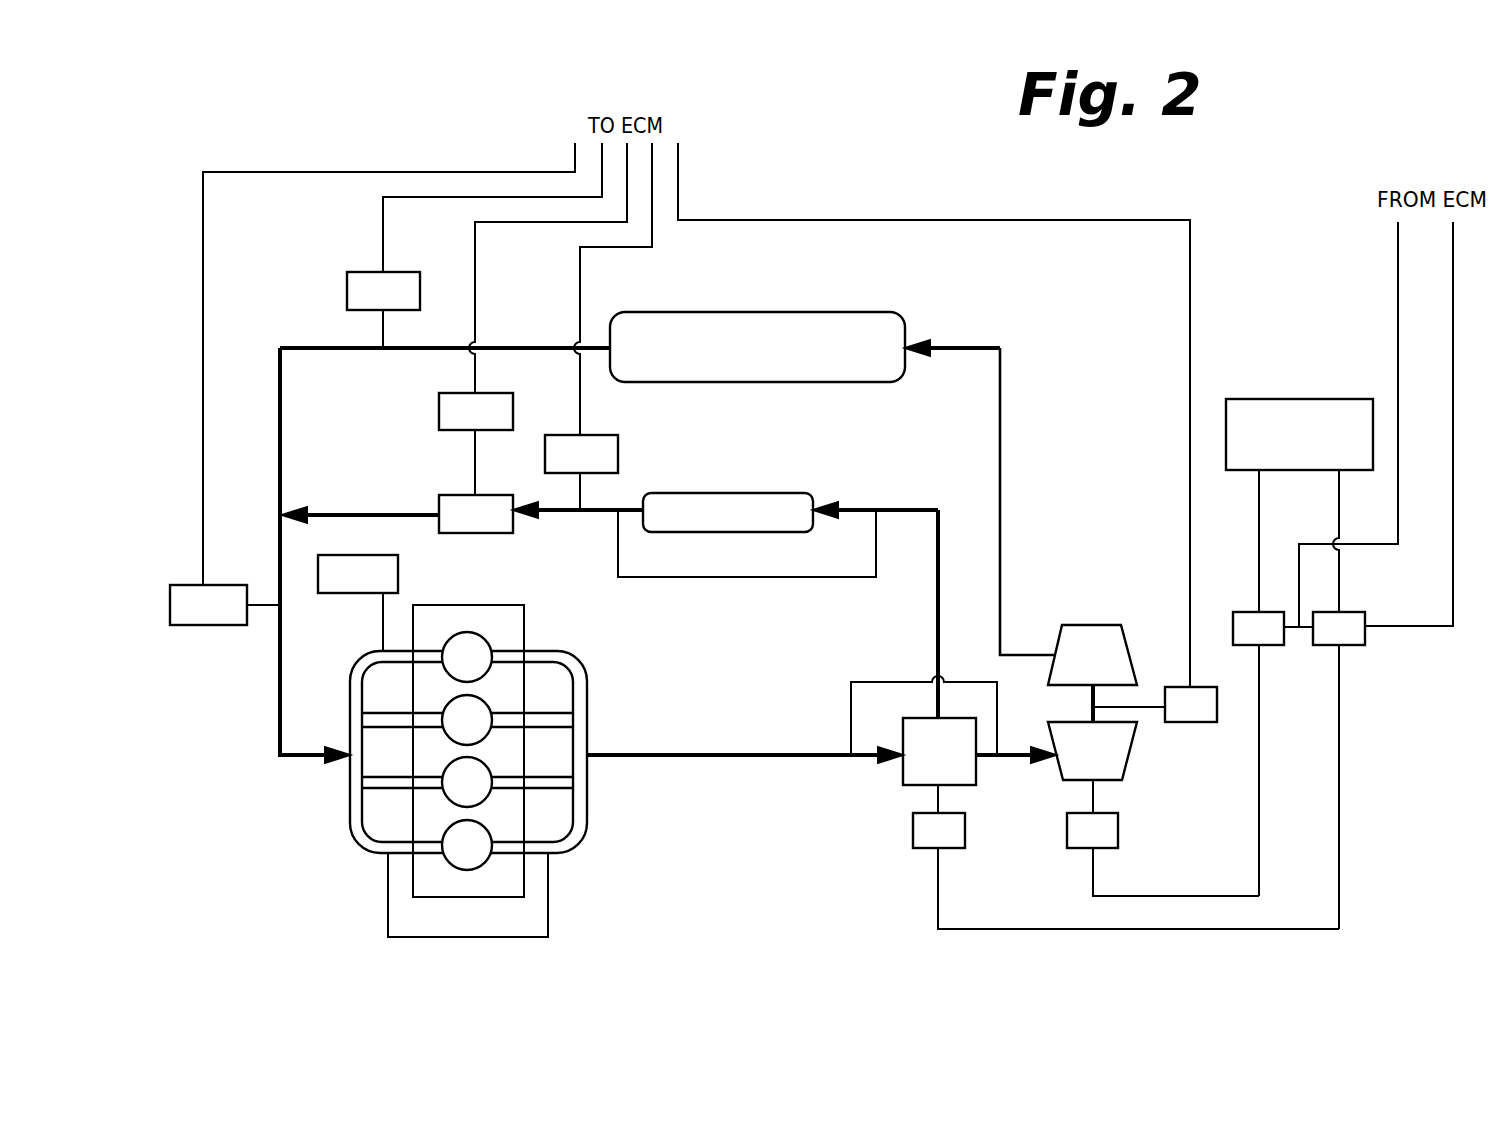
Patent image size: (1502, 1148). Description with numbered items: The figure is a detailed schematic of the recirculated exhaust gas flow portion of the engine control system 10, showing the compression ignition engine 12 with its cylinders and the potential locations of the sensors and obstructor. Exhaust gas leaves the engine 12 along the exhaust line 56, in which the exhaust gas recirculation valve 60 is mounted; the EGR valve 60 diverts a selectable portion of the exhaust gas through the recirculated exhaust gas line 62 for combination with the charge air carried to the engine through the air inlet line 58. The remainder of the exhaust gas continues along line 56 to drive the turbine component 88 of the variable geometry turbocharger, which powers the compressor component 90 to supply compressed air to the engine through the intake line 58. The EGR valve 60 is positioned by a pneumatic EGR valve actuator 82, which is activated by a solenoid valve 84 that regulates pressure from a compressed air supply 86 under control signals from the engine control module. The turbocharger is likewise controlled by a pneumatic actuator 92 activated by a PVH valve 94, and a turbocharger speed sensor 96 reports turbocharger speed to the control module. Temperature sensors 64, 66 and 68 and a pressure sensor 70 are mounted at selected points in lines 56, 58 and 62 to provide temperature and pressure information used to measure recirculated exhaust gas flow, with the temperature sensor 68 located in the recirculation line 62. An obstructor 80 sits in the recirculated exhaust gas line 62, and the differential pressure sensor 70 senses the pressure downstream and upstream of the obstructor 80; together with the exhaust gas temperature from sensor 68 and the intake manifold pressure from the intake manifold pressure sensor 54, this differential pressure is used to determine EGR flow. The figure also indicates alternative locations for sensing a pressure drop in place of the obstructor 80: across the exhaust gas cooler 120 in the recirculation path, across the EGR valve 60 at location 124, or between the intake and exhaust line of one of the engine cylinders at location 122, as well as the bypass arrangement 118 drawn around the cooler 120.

The system 10 is at (787, 862).
The compression ignition engine 12 is at (495, 605).
The intake manifold pressure sensor 54 is at (398, 580).
The exhaust line 56 is at (673, 753).
The air inlet line 58 is at (1002, 488).
The exhaust gas recirculation valve 60 is at (903, 768).
The recirculated exhaust gas line 62 is at (938, 590).
The temperature sensor 64 is at (347, 297).
The temperature sensor 66 is at (215, 625).
The temperature sensor 68 is at (618, 455).
The pressure sensor 70 is at (439, 420).
The obstructor 80 is at (439, 505).
The EGR valve actuator 82 is at (965, 830).
The solenoid valve 84 is at (1350, 645).
The compressed air supply 86 is at (1299, 664).
The turbine component 88 is at (1125, 770).
The compressor component 90 is at (1093, 625).
The pneumatic actuator 92 is at (1118, 830).
The PVH valve 94 is at (1270, 645).
The turbocharger speed sensor 96 is at (1190, 722).
The bypass passage 118 is at (712, 577).
The exhaust gas cooler 120 is at (765, 493).
The engine cylinder intake and exhaust line location 122 is at (548, 912).
The EGR valve pressure drop location 124 is at (850, 693).